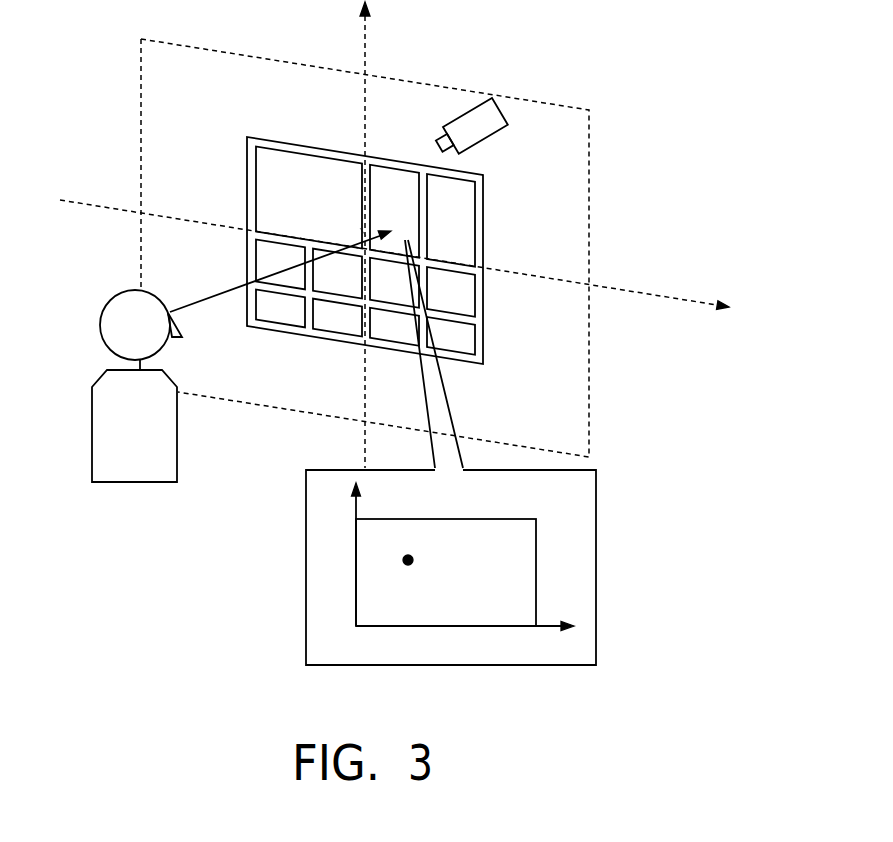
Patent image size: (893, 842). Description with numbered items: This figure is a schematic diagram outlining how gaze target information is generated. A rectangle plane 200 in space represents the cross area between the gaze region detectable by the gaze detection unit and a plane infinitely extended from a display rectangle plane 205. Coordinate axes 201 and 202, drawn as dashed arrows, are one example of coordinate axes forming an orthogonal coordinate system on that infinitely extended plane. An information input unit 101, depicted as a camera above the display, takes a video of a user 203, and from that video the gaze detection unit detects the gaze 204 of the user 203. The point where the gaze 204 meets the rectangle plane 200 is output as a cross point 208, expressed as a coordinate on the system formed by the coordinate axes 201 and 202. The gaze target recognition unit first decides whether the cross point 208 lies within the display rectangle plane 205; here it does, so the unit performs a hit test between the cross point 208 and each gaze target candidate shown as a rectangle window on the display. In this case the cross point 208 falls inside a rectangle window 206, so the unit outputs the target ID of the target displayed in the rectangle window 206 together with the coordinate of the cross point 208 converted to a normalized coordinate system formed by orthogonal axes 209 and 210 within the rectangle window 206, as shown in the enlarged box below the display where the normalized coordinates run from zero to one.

The information input unit 101 is at (483, 106).
The rectangle plane 200 is at (593, 193).
The coordinate axis 201 is at (638, 292).
The coordinate axis 202 is at (365, 50).
The user 203 is at (177, 448).
The gaze 204 is at (213, 297).
The display rectangle plane 205 is at (485, 320).
The rectangle window 206 is at (363, 232).
The cross point 208 is at (391, 232).
The orthogonal axis 209 is at (547, 623).
The orthogonal axis 210 is at (360, 507).